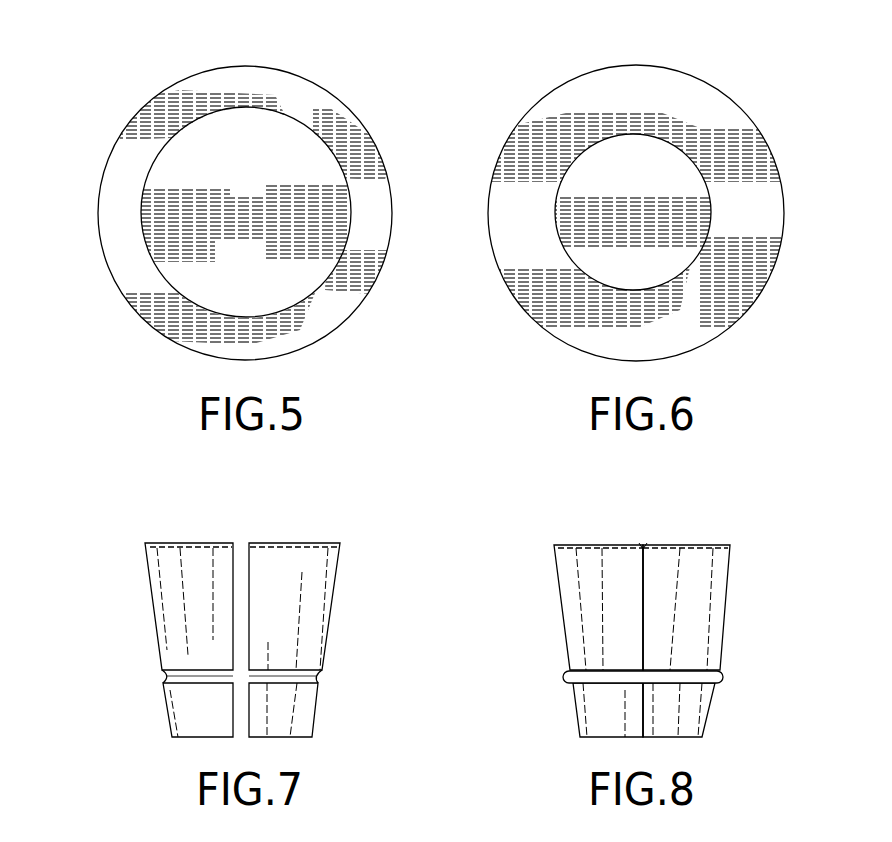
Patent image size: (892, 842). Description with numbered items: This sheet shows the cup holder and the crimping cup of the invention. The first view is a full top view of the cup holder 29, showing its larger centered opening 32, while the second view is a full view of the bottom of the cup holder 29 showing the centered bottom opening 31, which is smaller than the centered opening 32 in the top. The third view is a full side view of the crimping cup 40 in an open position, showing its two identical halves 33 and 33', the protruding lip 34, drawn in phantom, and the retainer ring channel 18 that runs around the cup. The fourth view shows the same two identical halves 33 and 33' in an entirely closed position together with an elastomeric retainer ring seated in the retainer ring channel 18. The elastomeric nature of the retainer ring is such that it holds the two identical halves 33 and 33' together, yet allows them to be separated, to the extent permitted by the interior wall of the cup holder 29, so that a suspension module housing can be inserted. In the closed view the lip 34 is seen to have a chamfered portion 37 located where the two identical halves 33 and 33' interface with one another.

In FIG. 5, the cup holder 29 is at (121, 76).
In FIG. 6, the cup holder 29 is at (519, 76).
In FIG. 6, the centered bottom opening 31 is at (672, 172).
In FIG. 5, the centered opening 32 is at (313, 267).
In FIG. 7, the crimping cup 40 is at (250, 593).
In FIG. 8, the crimping cup 40 is at (646, 599).
In FIG. 7, the identical half 33 is at (162, 628).
In FIG. 8, the identical half 33 is at (598, 613).
In FIG. 7, the identical half 33' is at (331, 640).
In FIG. 8, the identical half 33' is at (720, 641).
In FIG. 7, the protruding lip 34 is at (283, 543).
In FIG. 8, the protruding lip 34 is at (707, 540).
In FIG. 8, the chamfered portion 37 is at (643, 540).
In FIG. 7, the retainer ring channel 18 is at (295, 677).
In FIG. 8, the retainer ring channel 18 is at (722, 670).